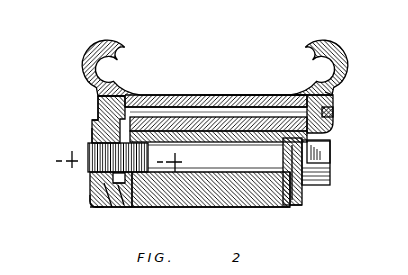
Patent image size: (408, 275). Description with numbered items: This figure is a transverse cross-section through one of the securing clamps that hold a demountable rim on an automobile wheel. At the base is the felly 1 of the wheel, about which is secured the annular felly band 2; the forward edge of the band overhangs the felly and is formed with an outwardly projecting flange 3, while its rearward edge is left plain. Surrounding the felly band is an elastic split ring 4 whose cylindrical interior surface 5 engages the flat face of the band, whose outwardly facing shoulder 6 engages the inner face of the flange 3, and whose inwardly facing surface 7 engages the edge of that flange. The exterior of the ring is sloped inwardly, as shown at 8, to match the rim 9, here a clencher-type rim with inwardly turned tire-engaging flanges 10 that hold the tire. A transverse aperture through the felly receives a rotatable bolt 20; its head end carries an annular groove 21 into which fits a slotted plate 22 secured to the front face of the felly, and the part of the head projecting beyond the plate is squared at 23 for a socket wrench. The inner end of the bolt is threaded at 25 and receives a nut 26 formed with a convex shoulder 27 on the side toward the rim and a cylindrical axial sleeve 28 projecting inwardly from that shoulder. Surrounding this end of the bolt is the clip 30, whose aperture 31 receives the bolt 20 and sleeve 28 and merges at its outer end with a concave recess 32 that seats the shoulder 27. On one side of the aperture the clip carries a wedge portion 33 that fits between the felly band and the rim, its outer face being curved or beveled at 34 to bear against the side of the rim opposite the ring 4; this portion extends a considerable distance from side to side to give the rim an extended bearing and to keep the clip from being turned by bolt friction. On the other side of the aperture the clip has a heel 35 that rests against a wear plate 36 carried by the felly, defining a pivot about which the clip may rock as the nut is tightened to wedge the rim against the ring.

The felly 1 is at (203, 207).
The felly band 2 is at (182, 117).
The flange 3 is at (333, 117).
The elastic split ring 4 is at (308, 92).
The cylindrical interior surface 5 is at (325, 133).
The outwardly facing shoulder 6 is at (306, 113).
The inwardly facing surface 7 is at (333, 103).
The sloped exterior surface 8 is at (334, 97).
The rim 9 is at (221, 95).
The tire-engaging flanges 10 is at (114, 40).
The bolt 20 is at (245, 190).
The annular groove 21 is at (272, 151).
The slotted plate 22 is at (300, 186).
The squared portion 23 is at (327, 157).
The threaded inner end 25 is at (90, 168).
The nut 26 is at (92, 133).
The convex shoulder 27 is at (92, 128).
The cylindrical axial sleeve 28 is at (107, 195).
The clip 30 is at (96, 114).
The aperture 31 is at (120, 198).
The concave recess 32 is at (94, 204).
The wedge portion 33 is at (142, 95).
The curved or beveled surface 34 is at (110, 94).
The heel 35 is at (115, 198).
The wear plate 36 is at (137, 207).